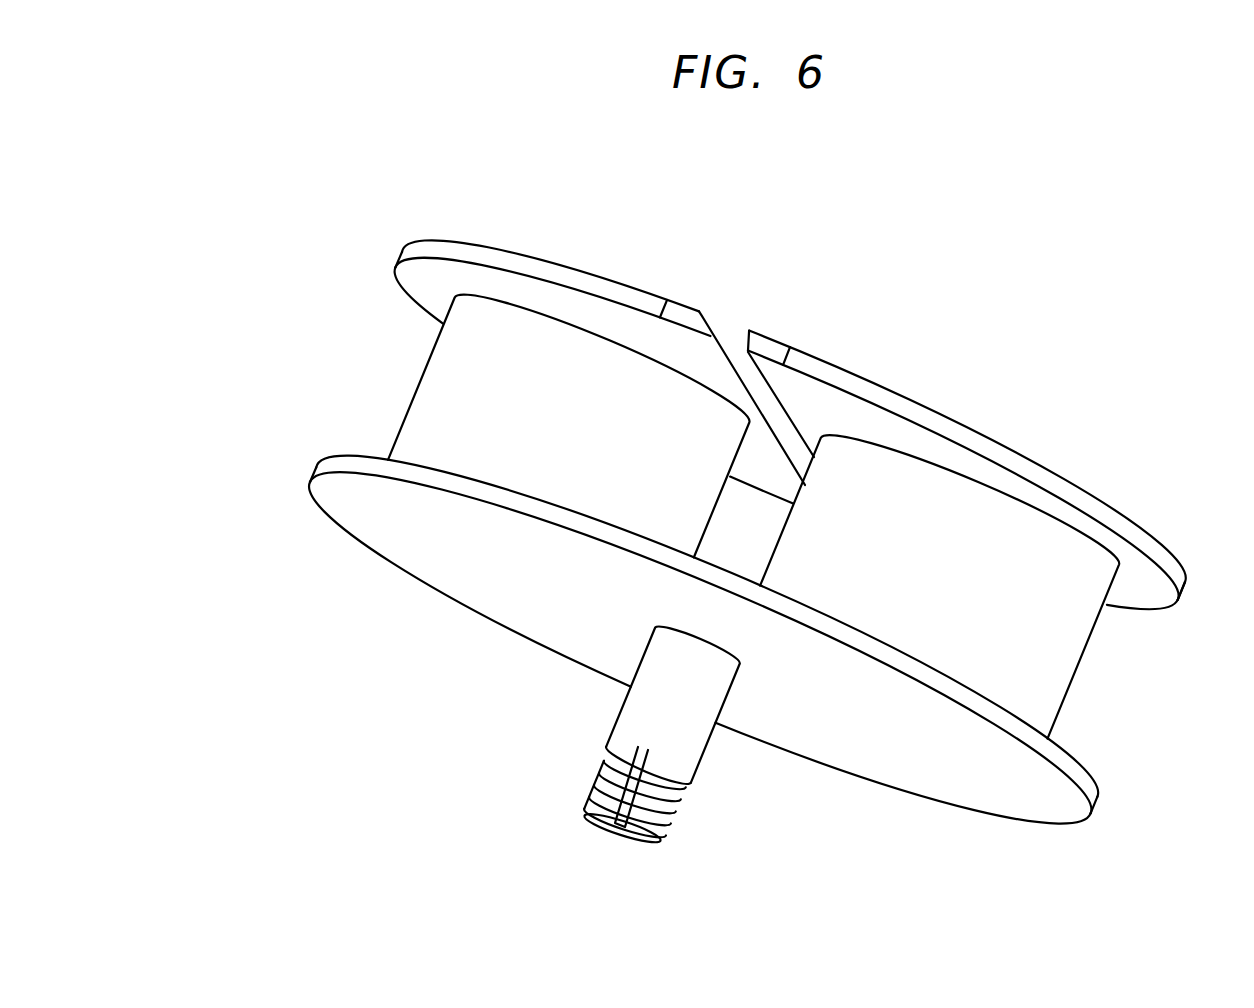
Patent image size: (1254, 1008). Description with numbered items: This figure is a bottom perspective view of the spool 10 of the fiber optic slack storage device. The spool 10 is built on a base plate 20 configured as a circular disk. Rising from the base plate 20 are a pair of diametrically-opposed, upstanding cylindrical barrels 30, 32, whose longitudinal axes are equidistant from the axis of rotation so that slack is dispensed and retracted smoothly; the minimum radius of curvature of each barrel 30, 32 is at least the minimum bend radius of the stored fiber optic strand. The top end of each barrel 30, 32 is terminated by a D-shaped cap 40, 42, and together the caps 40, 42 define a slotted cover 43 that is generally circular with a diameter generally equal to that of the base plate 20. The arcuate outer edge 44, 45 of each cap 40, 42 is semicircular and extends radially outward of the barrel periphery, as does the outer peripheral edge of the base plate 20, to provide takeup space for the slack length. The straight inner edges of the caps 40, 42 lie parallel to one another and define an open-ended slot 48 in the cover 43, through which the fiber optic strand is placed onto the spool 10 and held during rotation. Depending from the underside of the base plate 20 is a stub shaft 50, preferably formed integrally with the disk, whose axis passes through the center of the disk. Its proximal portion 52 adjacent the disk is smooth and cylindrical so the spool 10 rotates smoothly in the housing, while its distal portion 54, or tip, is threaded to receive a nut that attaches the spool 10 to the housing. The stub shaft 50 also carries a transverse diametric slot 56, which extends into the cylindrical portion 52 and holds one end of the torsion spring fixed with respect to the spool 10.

The spool 10 is at (978, 820).
The base plate 20 is at (1077, 763).
The cylindrical barrel 30 is at (1038, 660).
The cylindrical barrel 32 is at (455, 427).
The D-shaped cap 40 is at (958, 444).
The D-shaped cap 42 is at (553, 249).
The slotted cover 43 is at (848, 412).
The arcuate outer edge 44 is at (1090, 500).
The arcuate outer edge 45 is at (473, 255).
The slot 48 is at (717, 342).
The stub shaft 50 is at (654, 829).
The proximal portion 52 is at (700, 768).
The distal portion 54 is at (673, 808).
The transverse diametric slot 56 is at (617, 823).